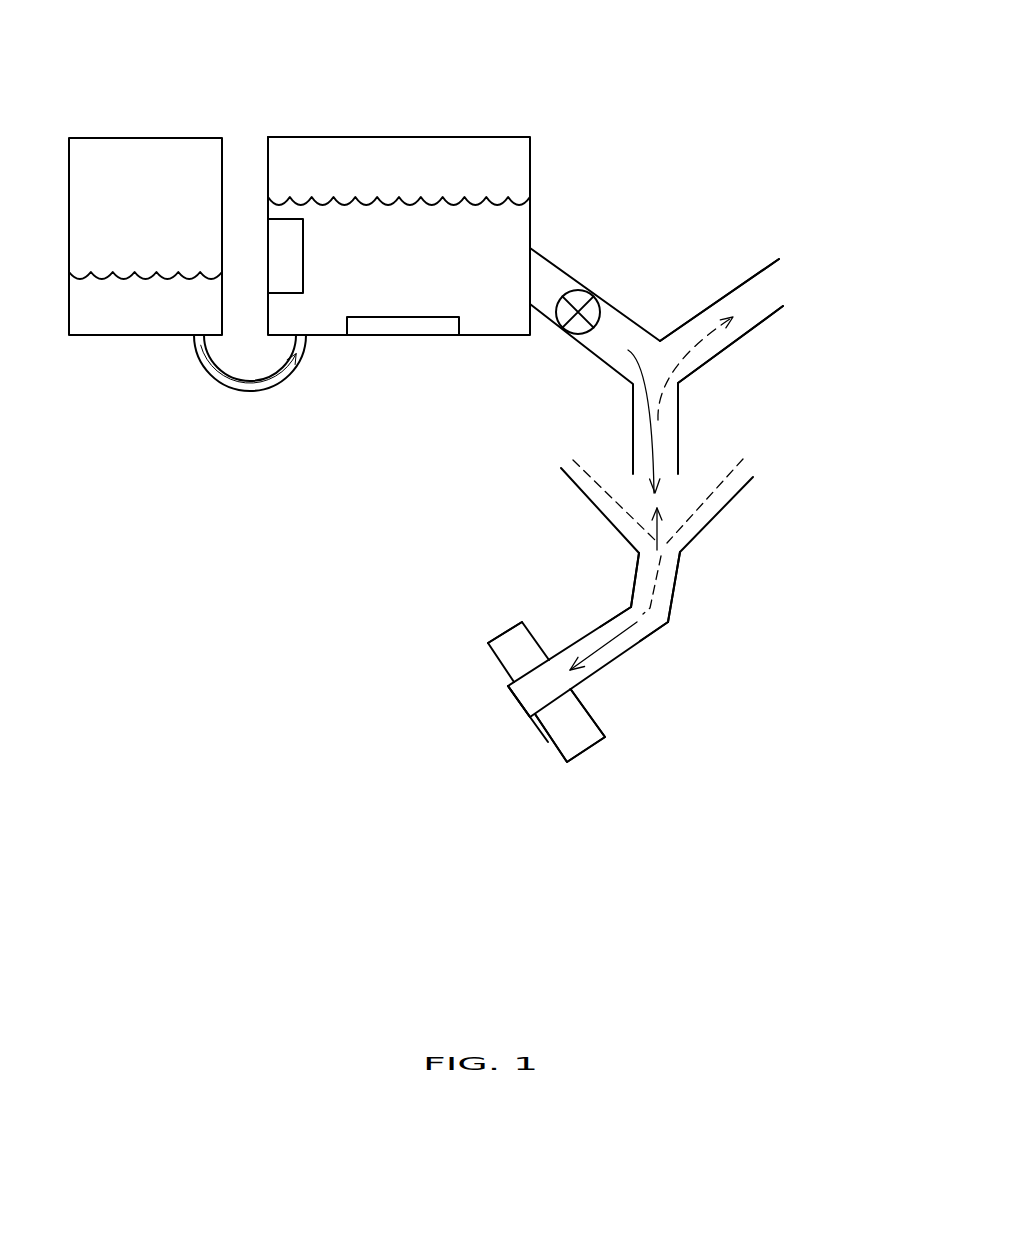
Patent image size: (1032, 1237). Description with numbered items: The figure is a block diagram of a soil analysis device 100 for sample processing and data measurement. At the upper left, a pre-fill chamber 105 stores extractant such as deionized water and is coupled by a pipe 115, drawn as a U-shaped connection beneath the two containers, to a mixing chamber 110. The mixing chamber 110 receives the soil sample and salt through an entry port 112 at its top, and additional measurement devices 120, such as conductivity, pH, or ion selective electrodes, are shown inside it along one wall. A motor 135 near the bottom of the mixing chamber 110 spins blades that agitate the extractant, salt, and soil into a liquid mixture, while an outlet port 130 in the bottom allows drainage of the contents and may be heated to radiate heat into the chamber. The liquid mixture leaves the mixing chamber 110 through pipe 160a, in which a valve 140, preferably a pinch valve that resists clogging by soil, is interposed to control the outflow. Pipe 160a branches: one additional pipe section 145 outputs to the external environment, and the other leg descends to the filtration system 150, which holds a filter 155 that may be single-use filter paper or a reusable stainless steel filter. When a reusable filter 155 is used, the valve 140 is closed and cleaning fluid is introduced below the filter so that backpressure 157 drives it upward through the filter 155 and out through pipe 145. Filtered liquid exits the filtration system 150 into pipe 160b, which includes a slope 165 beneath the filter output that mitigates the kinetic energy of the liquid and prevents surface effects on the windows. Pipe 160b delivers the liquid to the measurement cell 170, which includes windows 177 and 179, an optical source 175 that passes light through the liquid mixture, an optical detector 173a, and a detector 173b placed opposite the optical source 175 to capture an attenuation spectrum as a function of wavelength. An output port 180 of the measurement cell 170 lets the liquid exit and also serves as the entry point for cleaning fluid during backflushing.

The soil analysis device 100 is at (867, 113).
The pre-fill chamber 105 is at (106, 168).
The mixing chamber 110 is at (480, 168).
The entry port 112 is at (287, 137).
The pipe 115 is at (207, 368).
The measurement devices 120 is at (292, 260).
The outlet port 130 is at (400, 337).
The motor 135 is at (385, 327).
The valve 140 is at (577, 300).
The additional pipe section 145 is at (760, 327).
The filtration system 150 is at (737, 500).
The filter 155 is at (728, 475).
The backpressure 157 is at (658, 577).
The pipe 160a is at (547, 258).
The pipe 160b is at (673, 602).
The slope 165 is at (638, 643).
The measurement cell 170 is at (542, 685).
The optical detector 173a is at (517, 653).
The detector 173b is at (645, 734).
The optical source 175 is at (567, 725).
The window 177 is at (548, 710).
The window 179 is at (488, 642).
The output port 180 is at (517, 705).